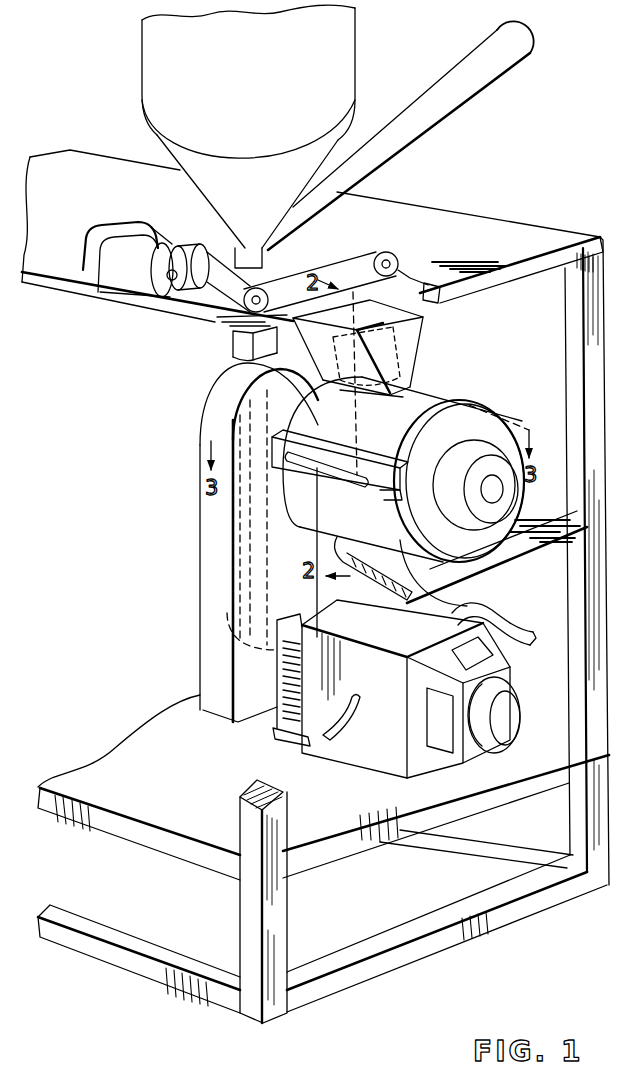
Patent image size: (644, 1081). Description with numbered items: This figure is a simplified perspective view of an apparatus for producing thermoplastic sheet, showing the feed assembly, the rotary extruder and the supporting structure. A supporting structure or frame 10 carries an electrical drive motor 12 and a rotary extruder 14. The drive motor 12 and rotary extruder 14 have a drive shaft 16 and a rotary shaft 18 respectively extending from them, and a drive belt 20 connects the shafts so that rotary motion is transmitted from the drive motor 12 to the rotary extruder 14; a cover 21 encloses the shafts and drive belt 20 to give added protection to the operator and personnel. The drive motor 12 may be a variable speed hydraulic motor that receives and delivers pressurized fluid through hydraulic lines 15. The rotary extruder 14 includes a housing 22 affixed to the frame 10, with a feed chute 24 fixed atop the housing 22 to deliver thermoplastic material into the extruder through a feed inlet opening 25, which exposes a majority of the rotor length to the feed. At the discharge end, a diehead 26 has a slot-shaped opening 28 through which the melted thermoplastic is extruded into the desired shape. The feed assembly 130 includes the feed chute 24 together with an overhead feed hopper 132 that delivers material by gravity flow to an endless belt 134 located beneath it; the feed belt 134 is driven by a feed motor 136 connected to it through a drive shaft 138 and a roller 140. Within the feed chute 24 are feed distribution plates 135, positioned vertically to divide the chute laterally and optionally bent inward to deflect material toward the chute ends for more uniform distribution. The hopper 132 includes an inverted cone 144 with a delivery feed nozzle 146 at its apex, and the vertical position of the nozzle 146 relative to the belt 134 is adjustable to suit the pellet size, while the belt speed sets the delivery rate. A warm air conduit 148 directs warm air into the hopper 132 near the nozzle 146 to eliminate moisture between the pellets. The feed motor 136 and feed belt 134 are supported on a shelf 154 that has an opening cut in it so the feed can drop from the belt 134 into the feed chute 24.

The supporting structure or frame 10 is at (527, 226).
The drive motor 12 is at (355, 762).
The rotary extruder 14 is at (503, 410).
The hydraulic lines 15 is at (522, 630).
The drive shaft 16 is at (267, 650).
The rotary shaft 18 is at (232, 437).
The drive belt 20 is at (240, 524).
The cover 21 is at (200, 563).
The housing 22 is at (415, 577).
The feed chute 24 is at (422, 351).
The feed inlet opening 25 is at (415, 381).
The diehead 26 is at (370, 494).
The slot-shaped opening 28 is at (314, 490).
The feed assembly 130 is at (143, 120).
The overhead feed hopper 132 is at (350, 50).
The endless belt 134 is at (366, 242).
The feed distribution plates 135 is at (422, 330).
The feed motor 136 is at (106, 225).
The drive shaft 138 is at (170, 243).
The roller 140 is at (217, 331).
The inverted cone 144 is at (322, 152).
The delivery feed nozzle 146 is at (267, 258).
The warm air conduit 148 is at (533, 55).
The shelf 154 is at (507, 247).